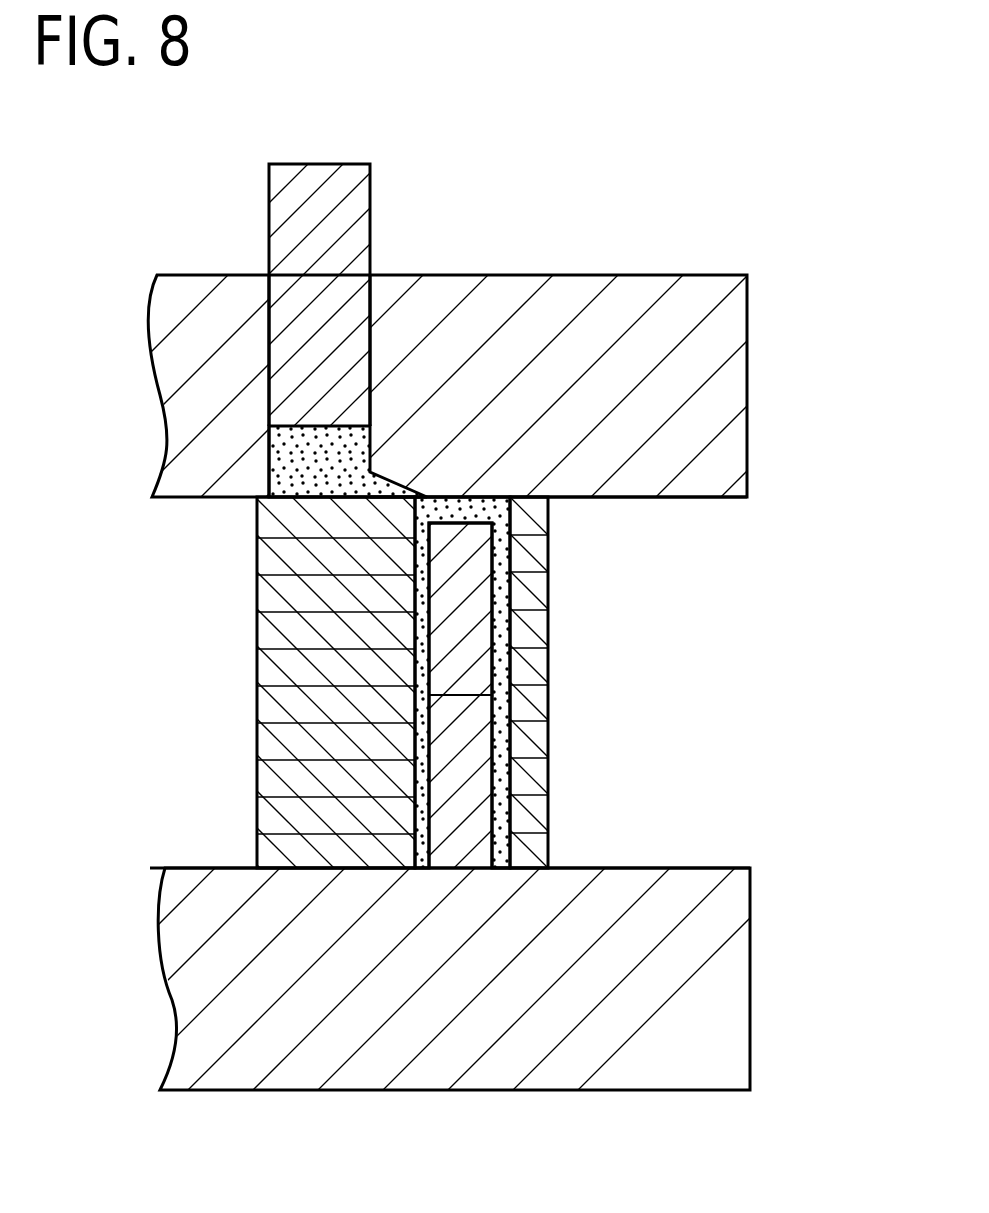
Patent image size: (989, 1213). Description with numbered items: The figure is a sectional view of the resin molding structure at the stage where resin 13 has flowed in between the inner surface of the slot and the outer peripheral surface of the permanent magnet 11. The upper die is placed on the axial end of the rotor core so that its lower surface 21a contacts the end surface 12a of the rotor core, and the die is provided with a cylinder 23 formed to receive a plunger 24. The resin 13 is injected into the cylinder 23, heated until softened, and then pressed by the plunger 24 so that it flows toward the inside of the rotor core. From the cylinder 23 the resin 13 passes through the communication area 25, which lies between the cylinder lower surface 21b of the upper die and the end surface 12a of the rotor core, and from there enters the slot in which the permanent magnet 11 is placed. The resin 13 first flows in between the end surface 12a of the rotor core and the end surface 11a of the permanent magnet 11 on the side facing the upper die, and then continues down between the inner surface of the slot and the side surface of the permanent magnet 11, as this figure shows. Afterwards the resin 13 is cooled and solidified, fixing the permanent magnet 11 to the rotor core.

The permanent magnet 11 is at (475, 793).
The end surface of the permanent magnet 11a is at (512, 500).
The end surface of the rotor core 12a is at (303, 497).
The resin 13 is at (347, 448).
The lower surface of the upper die 21a is at (645, 497).
The cylinder lower surface 21b is at (405, 480).
The cylinder 23 is at (367, 347).
The plunger 24 is at (297, 185).
The communication area 25 is at (410, 476).